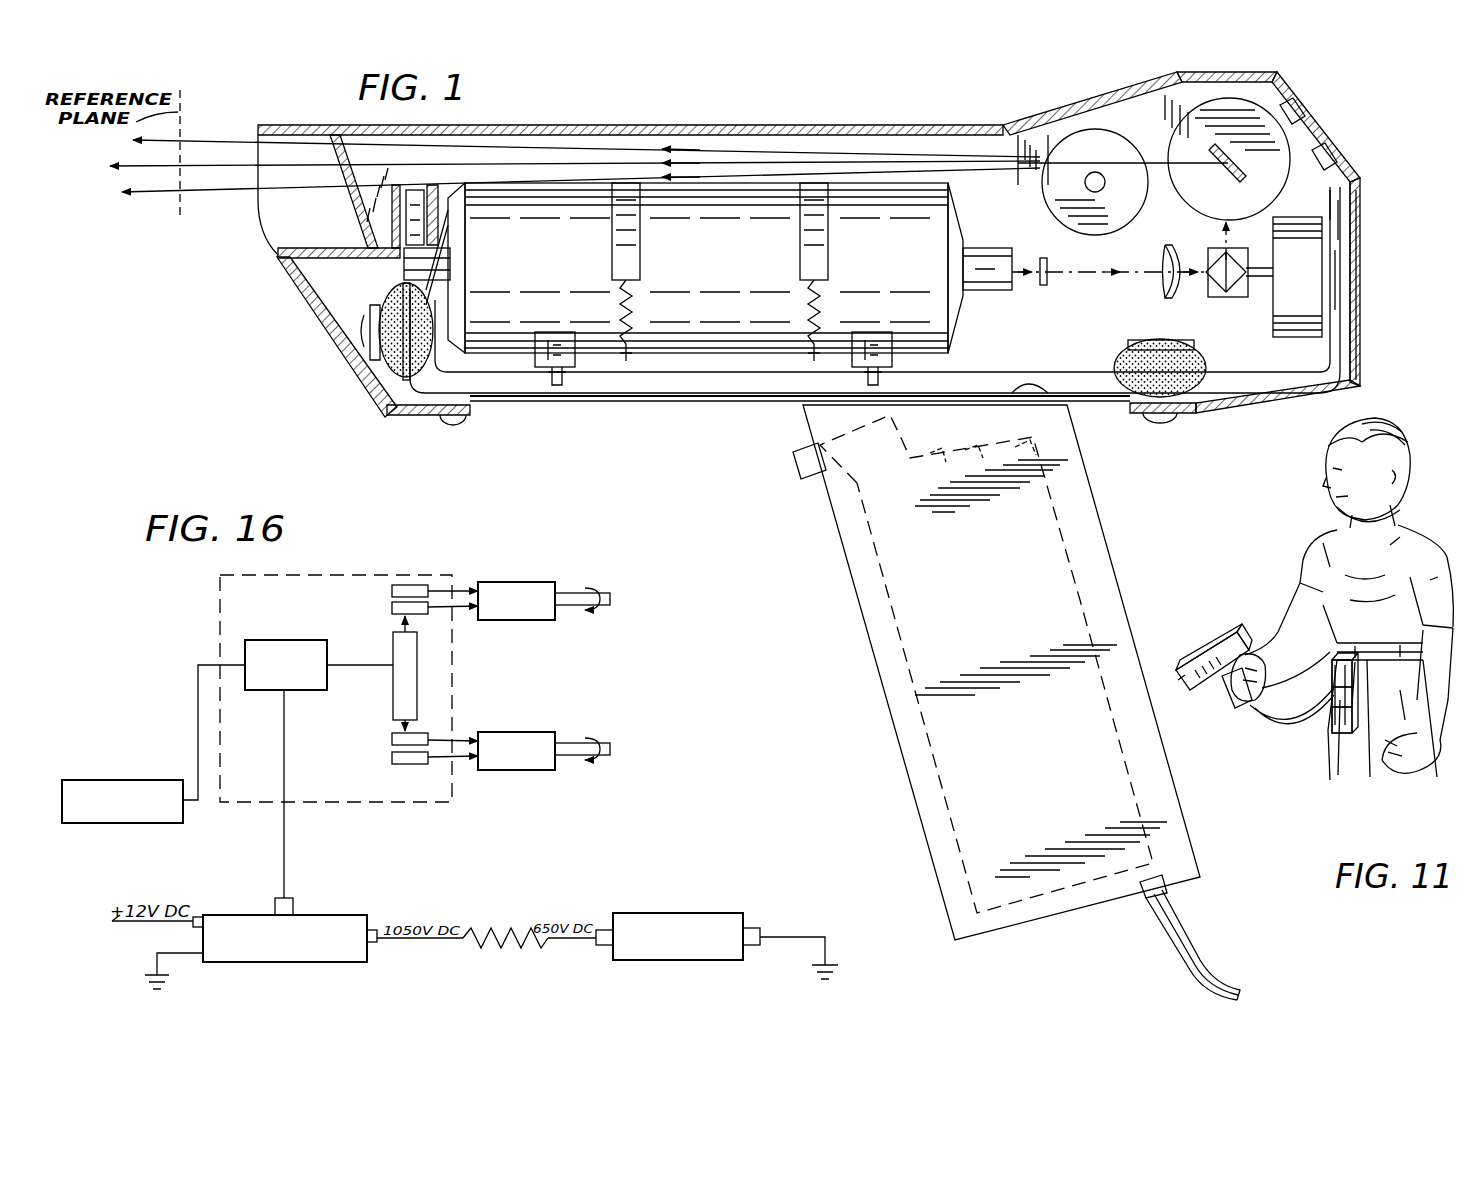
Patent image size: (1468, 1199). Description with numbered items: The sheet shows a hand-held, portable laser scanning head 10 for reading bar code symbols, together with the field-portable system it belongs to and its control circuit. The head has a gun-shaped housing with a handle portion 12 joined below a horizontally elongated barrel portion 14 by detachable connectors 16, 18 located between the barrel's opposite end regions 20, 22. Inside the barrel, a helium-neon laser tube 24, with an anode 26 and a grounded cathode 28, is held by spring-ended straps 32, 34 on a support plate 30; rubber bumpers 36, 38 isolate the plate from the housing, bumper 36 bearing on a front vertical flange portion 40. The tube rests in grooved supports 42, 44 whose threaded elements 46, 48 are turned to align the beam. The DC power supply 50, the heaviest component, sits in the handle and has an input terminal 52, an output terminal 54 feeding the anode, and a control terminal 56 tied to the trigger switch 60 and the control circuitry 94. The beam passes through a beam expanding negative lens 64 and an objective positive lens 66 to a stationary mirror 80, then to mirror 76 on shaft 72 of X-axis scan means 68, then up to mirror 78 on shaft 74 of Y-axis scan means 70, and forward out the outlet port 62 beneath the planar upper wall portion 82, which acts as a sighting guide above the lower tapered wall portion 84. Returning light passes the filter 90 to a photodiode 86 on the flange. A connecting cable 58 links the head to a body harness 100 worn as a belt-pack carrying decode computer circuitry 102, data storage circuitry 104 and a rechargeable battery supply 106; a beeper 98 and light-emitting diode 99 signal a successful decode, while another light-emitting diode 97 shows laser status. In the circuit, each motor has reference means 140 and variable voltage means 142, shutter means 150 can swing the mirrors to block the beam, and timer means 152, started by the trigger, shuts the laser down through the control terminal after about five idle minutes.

In FIG. 1, the laser scanning head 10 is at (710, 422).
In FIG. 11, the laser scanning head 10 is at (1218, 614).
In FIG. 1, the handle portion 12 is at (1100, 560).
In FIG. 11, the handle portion 12 is at (1244, 702).
In FIG. 1, the barrel portion 14 is at (1000, 126).
In FIG. 11, the barrel portion 14 is at (1203, 650).
In FIG. 1, the detachable connector 16 is at (830, 393).
In FIG. 1, the detachable connector 18 is at (1038, 372).
In FIG. 1, the end region 20 is at (272, 266).
In FIG. 1, the end region 22 is at (1363, 256).
In FIG. 1, the laser tube 24 is at (748, 283).
In FIG. 16, the laser tube 24 is at (690, 955).
In FIG. 1, the anode 26 is at (986, 258).
In FIG. 16, the anode 26 is at (618, 970).
In FIG. 1, the cathode 28 is at (408, 263).
In FIG. 16, the cathode 28 is at (752, 928).
In FIG. 1, the support plate 30 is at (1028, 372).
In FIG. 1, the strap 32 is at (640, 250).
In FIG. 1, the strap 34 is at (830, 250).
In FIG. 1, the rubber bumper 36 is at (375, 378).
In FIG. 1, the rubber bumper 38 is at (1190, 400).
In FIG. 1, the front vertical flange portion 40 is at (458, 330).
In FIG. 1, the grooved support 42 is at (553, 333).
In FIG. 1, the grooved support 44 is at (878, 345).
In FIG. 1, the threaded element 46 is at (562, 382).
In FIG. 1, the threaded element 48 is at (882, 382).
In FIG. 1, the DC power supply 50 is at (905, 720).
In FIG. 16, the DC power supply 50 is at (310, 962).
In FIG. 1, the input terminal 52 is at (1042, 437).
In FIG. 16, the input terminal 52 is at (200, 912).
In FIG. 1, the output terminal 54 is at (985, 445).
In FIG. 16, the output terminal 54 is at (378, 942).
In FIG. 1, the control terminal 56 is at (951, 441).
In FIG. 16, the control terminal 56 is at (295, 900).
In FIG. 1, the connecting cable 58 is at (1196, 930).
In FIG. 11, the connecting cable 58 is at (1262, 712).
In FIG. 1, the trigger switch 60 is at (800, 470).
In FIG. 16, the trigger switch 60 is at (152, 780).
In FIG. 1, the outlet port 62 is at (350, 220).
In FIG. 1, the beam expanding negative lens 64 is at (1046, 288).
In FIG. 1, the objective positive lens 66 is at (1168, 298).
In FIG. 1, the X-axis scan means 68 is at (1305, 288).
In FIG. 16, the X-axis scan means 68 is at (512, 582).
In FIG. 1, the Y-axis scan means 70 is at (1245, 118).
In FIG. 16, the Y-axis scan means 70 is at (526, 732).
In FIG. 1, the output shaft 72 is at (1258, 290).
In FIG. 16, the output shaft 72 is at (612, 599).
In FIG. 1, the output shaft 74 is at (1243, 163).
In FIG. 16, the output shaft 74 is at (612, 749).
In FIG. 1, the mirror 76 is at (1210, 295).
In FIG. 1, the mirror 78 is at (1210, 150).
In FIG. 1, the stationary light-reflecting mirror 80 is at (1232, 248).
In FIG. 1, the upper wall portion 82 is at (545, 126).
In FIG. 1, the lower tapered wall portion 84 is at (334, 338).
In FIG. 1, the photodiode 86 is at (437, 218).
In FIG. 1, the filter 90 is at (383, 208).
In FIG. 16, the control circuitry 94 is at (280, 575).
In FIG. 1, the light-emitting diode 97 is at (1333, 158).
In FIG. 1, the auditory beeper 98 is at (1120, 212).
In FIG. 1, the light-emitting diode 99 is at (1303, 112).
In FIG. 11, the body harness 100 is at (1413, 718).
In FIG. 11, the decode computer circuitry 102 is at (1332, 672).
In FIG. 11, the data storage circuitry 104 is at (1332, 692).
In FIG. 11, the rechargeable battery supply 106 is at (1332, 722).
In FIG. 16, the reference means 140 is at (392, 592).
In FIG. 16, the variable voltage means 142 is at (392, 608).
In FIG. 16, the shutter means 150 is at (393, 643).
In FIG. 16, the timer means 152 is at (304, 640).